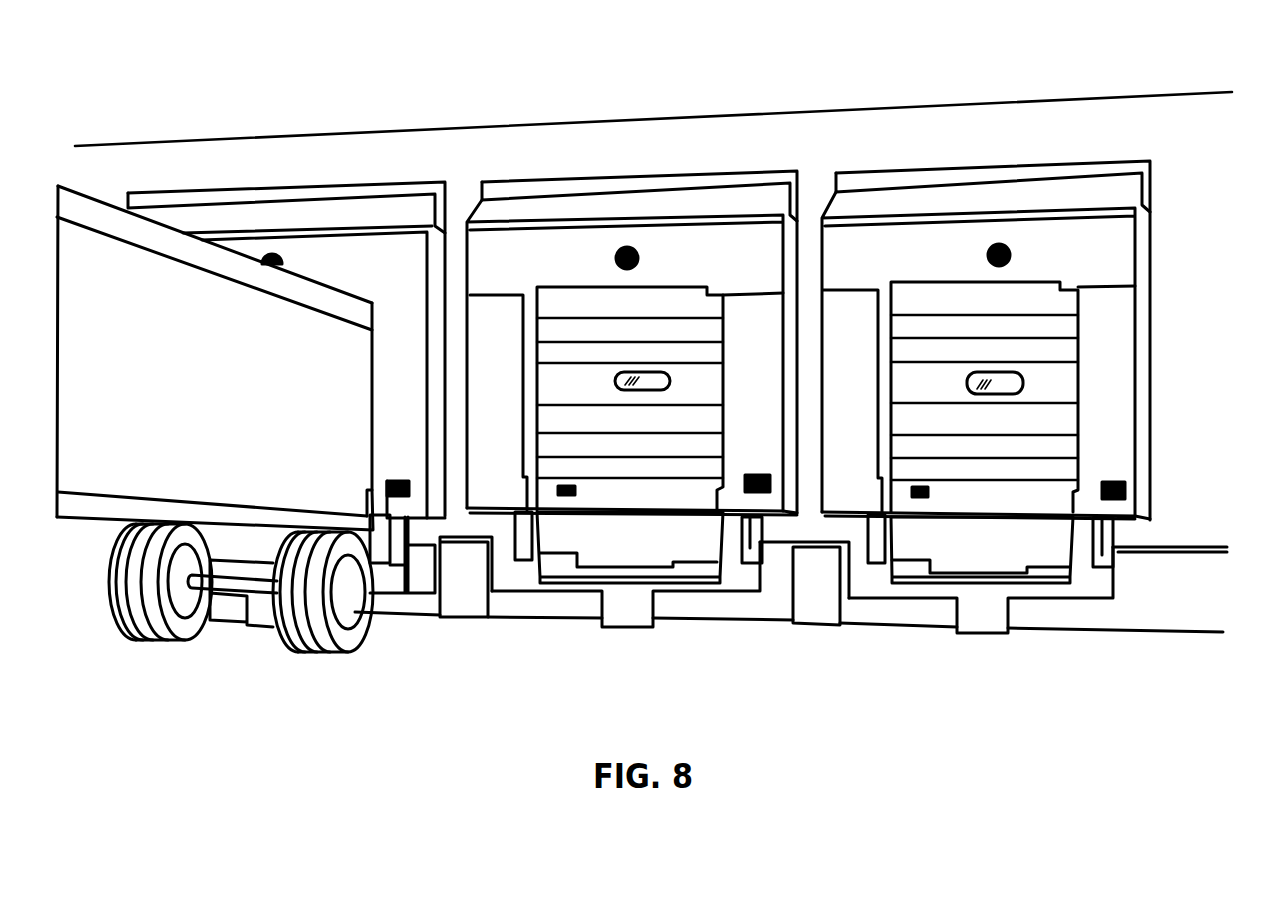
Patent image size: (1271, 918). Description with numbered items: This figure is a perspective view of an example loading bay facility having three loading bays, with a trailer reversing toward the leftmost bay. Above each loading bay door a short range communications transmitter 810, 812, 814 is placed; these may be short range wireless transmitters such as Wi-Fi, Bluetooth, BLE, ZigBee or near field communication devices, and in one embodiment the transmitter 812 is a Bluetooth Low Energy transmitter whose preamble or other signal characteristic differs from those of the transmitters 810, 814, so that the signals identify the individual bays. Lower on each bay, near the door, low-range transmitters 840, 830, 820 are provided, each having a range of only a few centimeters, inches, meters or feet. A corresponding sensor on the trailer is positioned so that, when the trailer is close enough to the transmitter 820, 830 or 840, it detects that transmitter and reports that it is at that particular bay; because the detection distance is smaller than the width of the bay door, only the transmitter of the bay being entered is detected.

The short range communications transmitter 810 is at (290, 248).
The short range communications transmitter 812 is at (648, 240).
The short range communications transmitter 814 is at (1012, 233).
The low-range transmitter 820 is at (1117, 502).
The low-range transmitter 830 is at (770, 487).
The low-range transmitter 840 is at (410, 498).